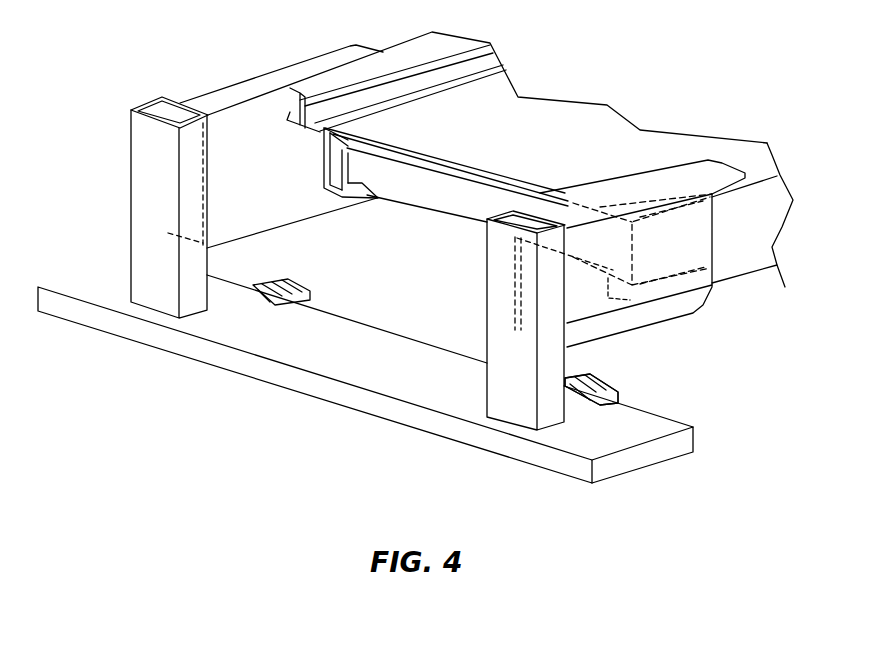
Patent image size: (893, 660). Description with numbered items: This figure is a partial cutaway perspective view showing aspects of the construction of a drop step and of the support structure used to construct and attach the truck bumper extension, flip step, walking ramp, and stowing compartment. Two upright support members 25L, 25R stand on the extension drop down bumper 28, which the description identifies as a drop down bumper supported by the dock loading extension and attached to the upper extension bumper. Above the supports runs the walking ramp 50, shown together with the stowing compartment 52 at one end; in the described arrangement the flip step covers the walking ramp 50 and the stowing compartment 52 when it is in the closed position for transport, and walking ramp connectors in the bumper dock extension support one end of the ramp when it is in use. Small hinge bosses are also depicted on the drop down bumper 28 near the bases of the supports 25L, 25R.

The left support post 25L is at (150, 273).
The right support post 25R is at (507, 382).
The extension drop down bumper 28 is at (343, 355).
The walking ramp 50 is at (447, 203).
The stowing compartment 52 is at (325, 168).